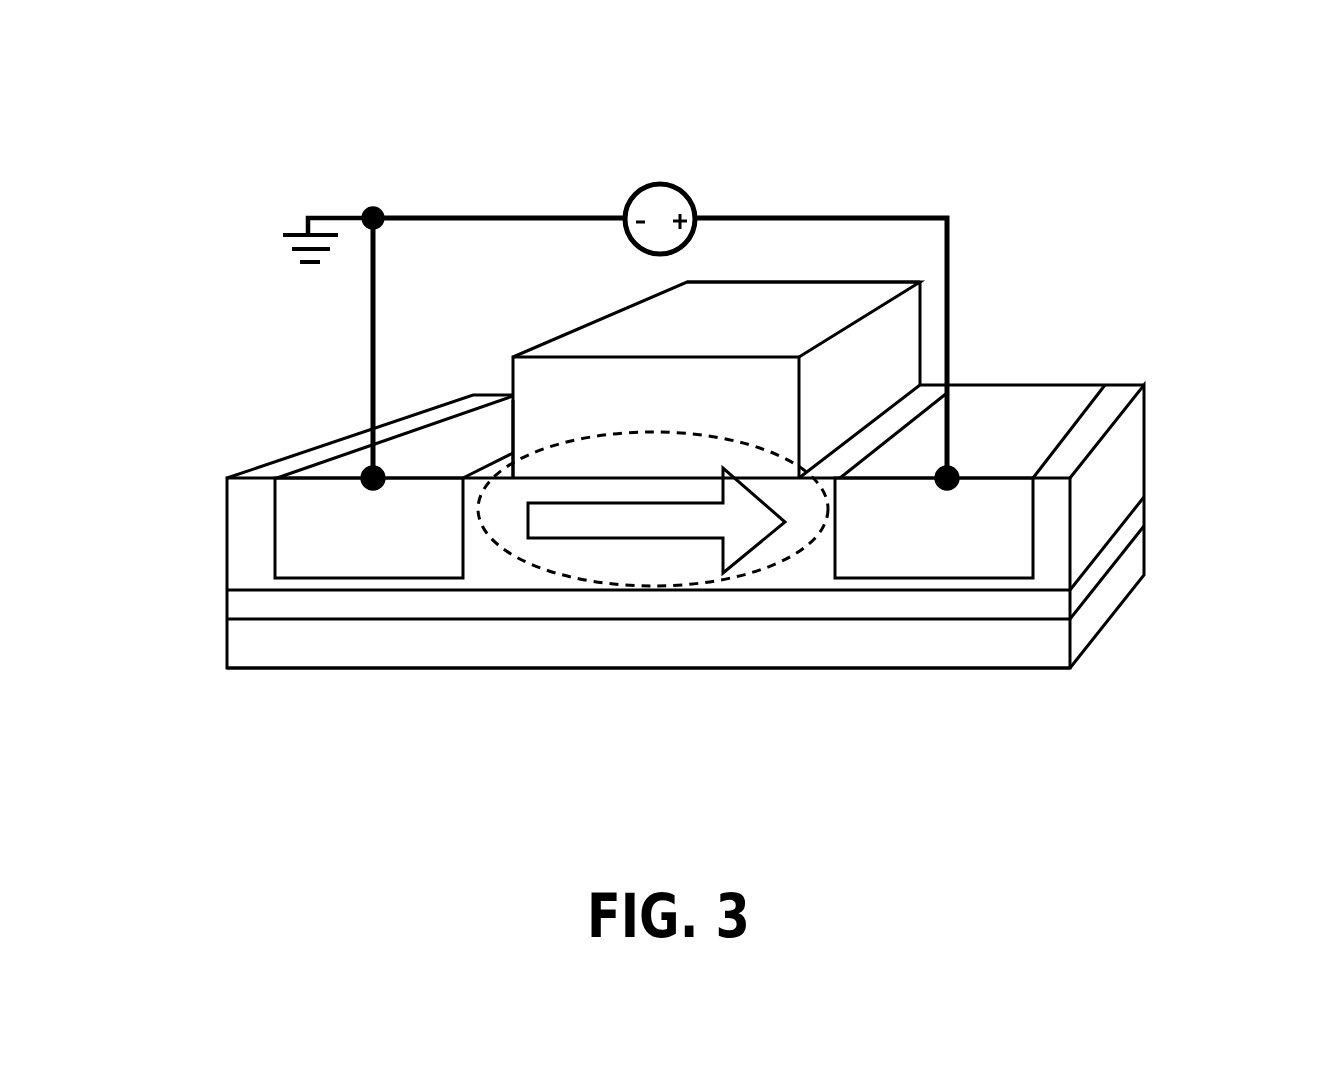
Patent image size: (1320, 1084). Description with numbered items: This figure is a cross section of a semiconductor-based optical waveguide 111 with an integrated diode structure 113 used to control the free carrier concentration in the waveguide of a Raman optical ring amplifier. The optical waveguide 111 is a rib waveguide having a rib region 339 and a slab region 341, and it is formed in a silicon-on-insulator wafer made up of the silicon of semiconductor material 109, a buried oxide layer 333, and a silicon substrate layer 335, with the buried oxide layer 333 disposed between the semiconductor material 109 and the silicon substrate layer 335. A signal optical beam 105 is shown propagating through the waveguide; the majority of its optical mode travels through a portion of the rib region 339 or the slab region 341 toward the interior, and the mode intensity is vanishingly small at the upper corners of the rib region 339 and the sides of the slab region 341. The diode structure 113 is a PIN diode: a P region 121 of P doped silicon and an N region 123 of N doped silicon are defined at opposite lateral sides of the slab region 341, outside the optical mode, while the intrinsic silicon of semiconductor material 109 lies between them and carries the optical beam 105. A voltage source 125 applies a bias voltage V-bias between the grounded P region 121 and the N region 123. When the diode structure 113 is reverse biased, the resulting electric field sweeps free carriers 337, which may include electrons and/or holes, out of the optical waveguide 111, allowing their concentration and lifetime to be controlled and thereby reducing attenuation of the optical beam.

The signal optical beam 105 is at (777, 567).
The semiconductor material 109 is at (1133, 462).
The optical waveguide 111 is at (520, 457).
The diode structure 113 is at (1037, 203).
The P region 121 is at (310, 494).
The N region 123 is at (1020, 553).
The voltage source 125 is at (618, 200).
The buried oxide layer 333 is at (592, 605).
The silicon substrate layer 335 is at (678, 648).
The free carriers 337 is at (668, 547).
The rib region 339 is at (528, 382).
The slab region 341 is at (500, 578).